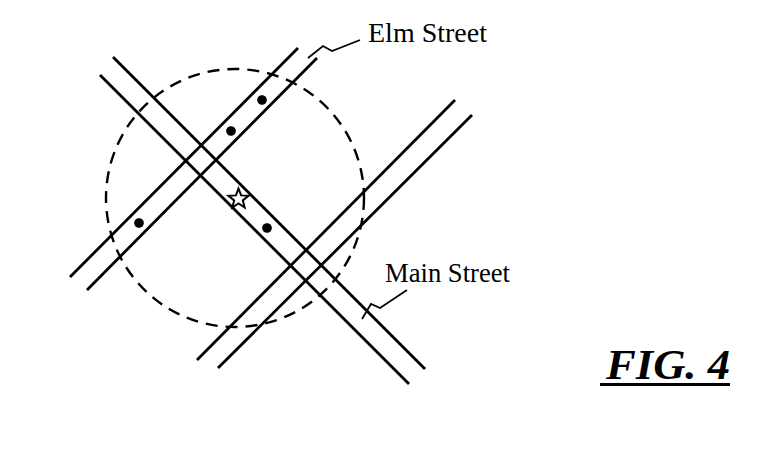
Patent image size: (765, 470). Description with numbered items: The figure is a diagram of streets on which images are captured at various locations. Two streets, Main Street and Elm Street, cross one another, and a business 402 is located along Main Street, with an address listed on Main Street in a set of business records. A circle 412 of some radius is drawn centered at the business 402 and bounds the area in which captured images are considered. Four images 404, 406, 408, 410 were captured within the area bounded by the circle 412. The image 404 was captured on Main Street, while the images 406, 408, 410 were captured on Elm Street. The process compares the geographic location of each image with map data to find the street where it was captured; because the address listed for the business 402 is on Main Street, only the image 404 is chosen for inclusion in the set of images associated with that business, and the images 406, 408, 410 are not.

The business 402 is at (246, 190).
The image 404 is at (265, 240).
The image 406 is at (131, 220).
The image 408 is at (142, 121).
The image 410 is at (262, 95).
The circle 412 is at (343, 119).